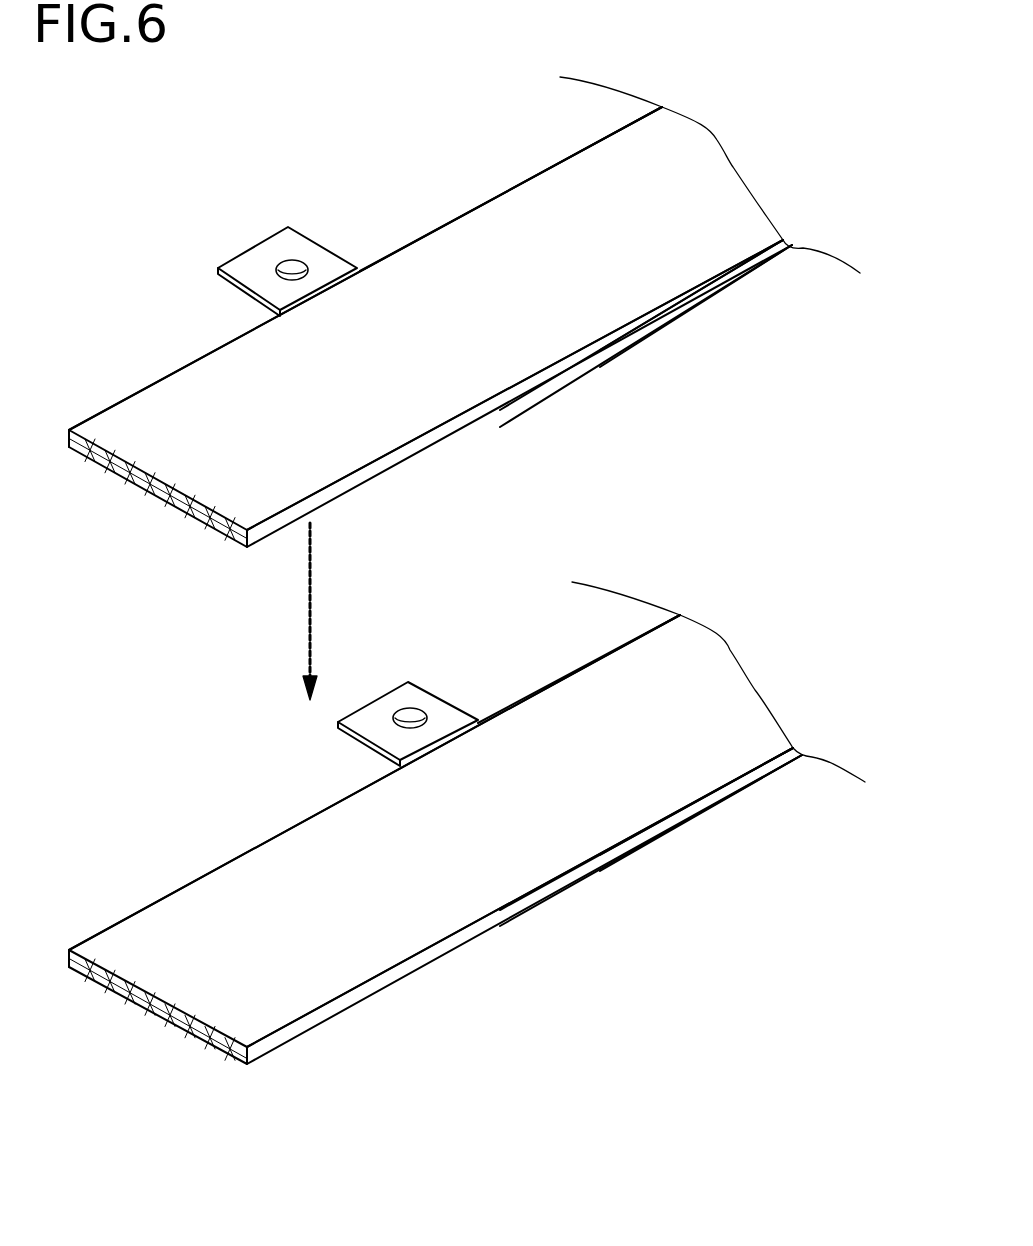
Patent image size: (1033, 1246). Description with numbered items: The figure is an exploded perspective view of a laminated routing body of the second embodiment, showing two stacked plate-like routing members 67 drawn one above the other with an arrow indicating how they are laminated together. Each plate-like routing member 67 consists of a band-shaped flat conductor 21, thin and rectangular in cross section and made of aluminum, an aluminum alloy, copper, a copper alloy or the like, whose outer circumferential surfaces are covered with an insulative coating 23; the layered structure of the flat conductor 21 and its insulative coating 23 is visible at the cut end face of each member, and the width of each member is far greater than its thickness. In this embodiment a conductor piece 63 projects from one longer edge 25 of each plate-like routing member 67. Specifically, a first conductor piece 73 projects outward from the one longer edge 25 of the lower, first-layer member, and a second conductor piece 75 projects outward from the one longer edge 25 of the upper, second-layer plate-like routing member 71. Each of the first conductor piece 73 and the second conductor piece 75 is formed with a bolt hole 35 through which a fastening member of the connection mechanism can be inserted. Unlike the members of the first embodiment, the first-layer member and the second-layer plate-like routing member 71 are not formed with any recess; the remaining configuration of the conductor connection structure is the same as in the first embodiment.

The flat conductor 21 is at (165, 503).
The insulative coating 23 is at (173, 423).
The one longer edge 25 is at (507, 192).
The bolt hole 35 is at (280, 267).
The conductor piece 63 is at (613, 878).
The plate-like routing member 67 is at (701, 609).
The second-layer plate-like routing member 71 is at (658, 330).
The first conductor piece 73 is at (398, 682).
The second conductor piece 75 is at (277, 227).